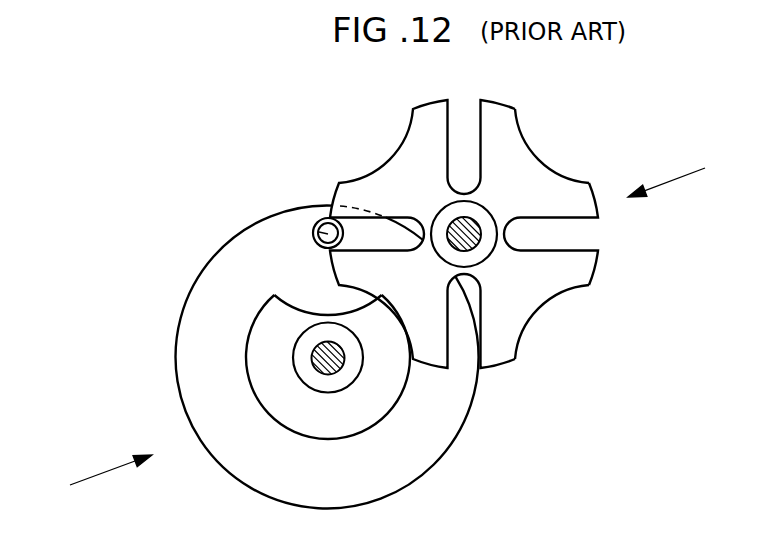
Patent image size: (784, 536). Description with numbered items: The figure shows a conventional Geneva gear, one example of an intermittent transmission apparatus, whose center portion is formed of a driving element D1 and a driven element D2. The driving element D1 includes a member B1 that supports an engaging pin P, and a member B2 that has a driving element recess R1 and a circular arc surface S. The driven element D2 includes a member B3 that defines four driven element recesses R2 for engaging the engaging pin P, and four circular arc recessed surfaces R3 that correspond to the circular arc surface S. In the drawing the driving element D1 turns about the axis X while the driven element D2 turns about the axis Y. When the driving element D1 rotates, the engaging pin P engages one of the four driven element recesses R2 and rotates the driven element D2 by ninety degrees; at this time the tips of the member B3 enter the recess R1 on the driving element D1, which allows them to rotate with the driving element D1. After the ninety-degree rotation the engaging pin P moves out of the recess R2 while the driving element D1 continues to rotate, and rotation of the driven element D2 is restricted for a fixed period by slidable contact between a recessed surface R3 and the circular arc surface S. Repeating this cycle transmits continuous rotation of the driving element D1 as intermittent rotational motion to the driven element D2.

The member B1 is at (243, 447).
The member B2 is at (380, 385).
The member B3 is at (575, 275).
The rotation axis of driving disc X is at (312, 358).
The rotation axis of driven wheel Y is at (478, 238).
The engaging pin P is at (318, 228).
The driving element recess R1 is at (302, 308).
The driven element recess R2 is at (380, 235).
The circular arc recessed surface R3 is at (542, 158).
The circular arc surface S is at (370, 430).
The driving element D1 is at (92, 478).
The driven element D2 is at (690, 175).